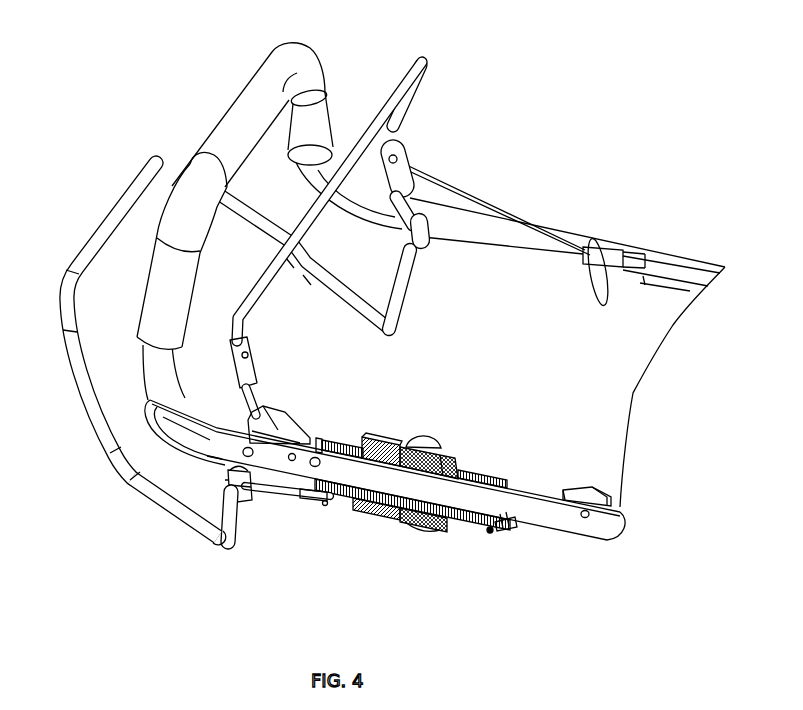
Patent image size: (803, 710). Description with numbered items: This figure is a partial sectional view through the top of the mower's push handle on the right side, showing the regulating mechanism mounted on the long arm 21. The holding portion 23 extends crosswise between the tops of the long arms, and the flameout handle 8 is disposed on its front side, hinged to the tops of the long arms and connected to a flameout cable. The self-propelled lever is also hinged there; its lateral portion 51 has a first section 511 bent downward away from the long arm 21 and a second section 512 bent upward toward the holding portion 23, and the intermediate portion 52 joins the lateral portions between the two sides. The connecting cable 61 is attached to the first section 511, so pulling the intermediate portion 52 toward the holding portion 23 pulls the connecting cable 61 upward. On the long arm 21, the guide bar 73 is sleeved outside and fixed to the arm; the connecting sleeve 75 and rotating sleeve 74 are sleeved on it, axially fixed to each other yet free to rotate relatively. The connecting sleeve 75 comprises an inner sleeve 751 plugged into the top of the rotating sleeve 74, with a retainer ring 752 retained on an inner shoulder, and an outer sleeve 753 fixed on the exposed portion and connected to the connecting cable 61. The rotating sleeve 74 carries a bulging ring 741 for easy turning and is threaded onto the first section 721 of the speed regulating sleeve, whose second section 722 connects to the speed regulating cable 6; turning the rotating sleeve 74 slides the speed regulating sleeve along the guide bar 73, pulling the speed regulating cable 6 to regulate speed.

The holding portion 23 is at (250, 105).
The intermediate portion 52 is at (137, 186).
The flameout handle 8 is at (430, 72).
The long arm 21 is at (540, 487).
The second section of the speed regulating sleeve 722 is at (500, 472).
The connecting sleeve 75 is at (338, 440).
The retainer ring 752 is at (343, 438).
The rotating sleeve 74 is at (387, 440).
The bulging ring 741 is at (424, 437).
The first section of the speed regulating sleeve 721 is at (466, 462).
The outer sleeve 753 is at (333, 502).
The inner sleeve 751 is at (363, 513).
The speed regulating cable 6 is at (513, 523).
The guide bar 73 is at (493, 523).
The connecting cable 61 is at (277, 498).
The first section 511 is at (232, 520).
The lateral portion 51 is at (228, 521).
The second section 512 is at (173, 513).